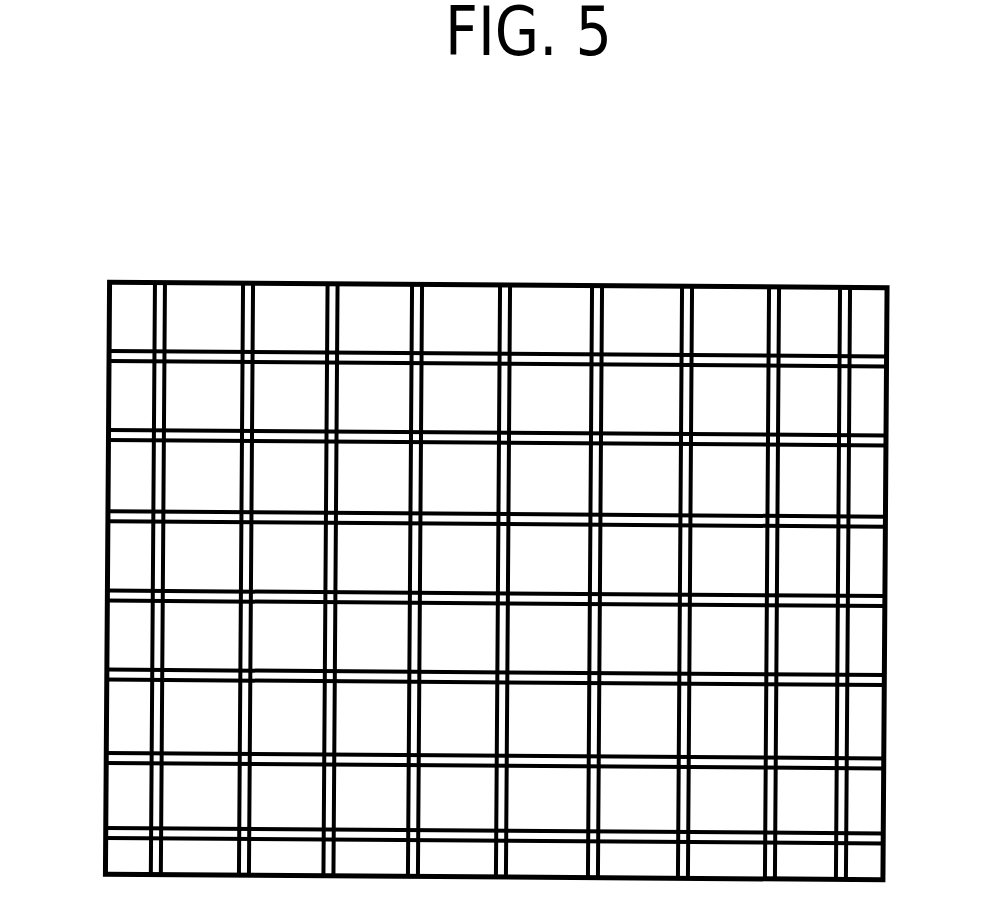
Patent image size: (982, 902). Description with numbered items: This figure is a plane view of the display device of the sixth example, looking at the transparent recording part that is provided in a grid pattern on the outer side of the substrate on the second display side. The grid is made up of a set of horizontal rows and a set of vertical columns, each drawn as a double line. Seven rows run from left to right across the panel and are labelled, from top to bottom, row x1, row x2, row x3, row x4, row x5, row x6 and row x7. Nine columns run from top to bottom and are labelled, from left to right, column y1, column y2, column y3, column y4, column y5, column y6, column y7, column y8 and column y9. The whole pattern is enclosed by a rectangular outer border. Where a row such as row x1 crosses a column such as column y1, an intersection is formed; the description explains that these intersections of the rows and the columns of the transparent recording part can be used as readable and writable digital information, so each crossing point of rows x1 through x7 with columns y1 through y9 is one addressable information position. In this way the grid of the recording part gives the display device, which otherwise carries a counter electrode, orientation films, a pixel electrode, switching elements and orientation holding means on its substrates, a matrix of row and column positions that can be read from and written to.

The row x1 is at (467, 359).
The row x2 is at (467, 437).
The row x3 is at (466, 516).
The row x4 is at (466, 595).
The row x5 is at (465, 674).
The row x6 is at (465, 751).
The row x7 is at (464, 831).
The column y1 is at (151, 550).
The column y2 is at (239, 550).
The column y3 is at (323, 551).
The column y4 is at (408, 551).
The column y5 is at (496, 552).
The column y6 is at (588, 553).
The column y7 is at (679, 553).
The column y8 is at (765, 554).
The column y9 is at (836, 554).